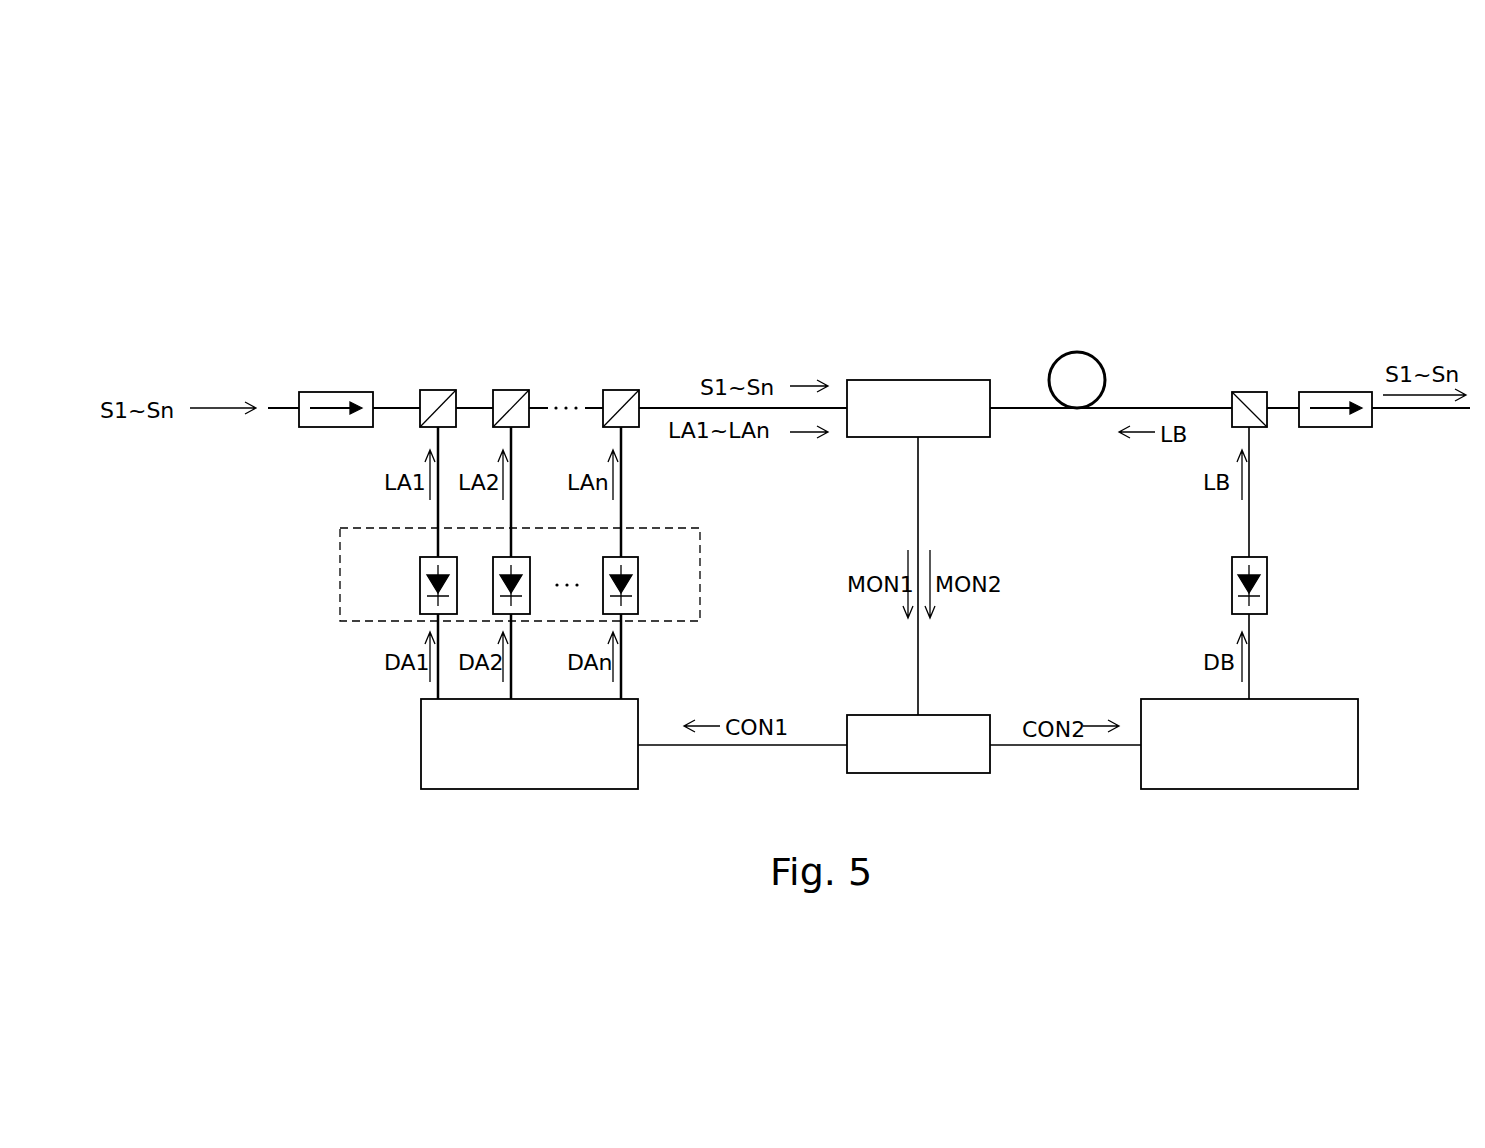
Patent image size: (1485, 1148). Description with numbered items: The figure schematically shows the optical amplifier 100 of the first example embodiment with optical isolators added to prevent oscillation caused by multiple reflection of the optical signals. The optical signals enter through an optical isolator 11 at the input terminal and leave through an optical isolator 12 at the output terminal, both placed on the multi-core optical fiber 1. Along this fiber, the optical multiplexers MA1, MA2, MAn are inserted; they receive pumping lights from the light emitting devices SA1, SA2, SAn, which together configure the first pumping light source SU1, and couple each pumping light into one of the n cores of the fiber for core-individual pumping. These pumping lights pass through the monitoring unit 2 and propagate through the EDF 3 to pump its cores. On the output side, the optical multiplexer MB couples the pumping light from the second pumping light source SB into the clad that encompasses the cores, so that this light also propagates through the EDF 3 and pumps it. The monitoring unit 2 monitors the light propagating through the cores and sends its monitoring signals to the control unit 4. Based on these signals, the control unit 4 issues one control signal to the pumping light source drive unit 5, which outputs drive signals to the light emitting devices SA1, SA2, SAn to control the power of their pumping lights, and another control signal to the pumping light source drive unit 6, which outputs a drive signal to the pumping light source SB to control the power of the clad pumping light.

The optical amplifier 100 is at (808, 218).
The optical isolator 11 is at (333, 390).
The multi-core optical fiber 1 is at (383, 408).
The optical multiplexer MA1 is at (438, 390).
The optical multiplexer MA2 is at (510, 390).
The optical multiplexer MAn is at (621, 390).
The monitoring unit 2 is at (914, 380).
The EDF 3 is at (1077, 348).
The optical multiplexer MB is at (1249, 392).
The optical isolator 12 is at (1336, 392).
The pumping light source SU1 is at (700, 546).
The light emitting device SA1 is at (420, 585).
The light emitting device SA2 is at (530, 570).
The light emitting device SAn is at (638, 570).
The pumping light source SB is at (1267, 570).
The pumping light source drive unit 5 is at (421, 738).
The control unit 4 is at (958, 773).
The pumping light source drive unit 6 is at (1358, 745).